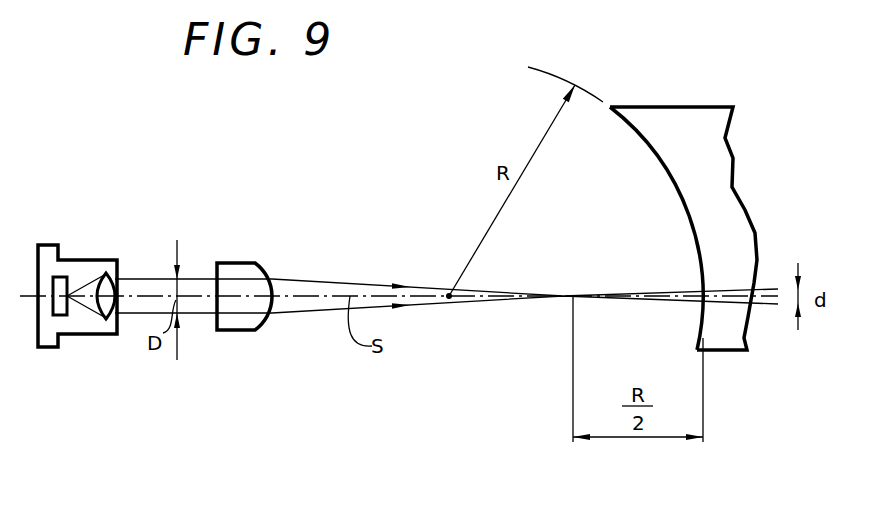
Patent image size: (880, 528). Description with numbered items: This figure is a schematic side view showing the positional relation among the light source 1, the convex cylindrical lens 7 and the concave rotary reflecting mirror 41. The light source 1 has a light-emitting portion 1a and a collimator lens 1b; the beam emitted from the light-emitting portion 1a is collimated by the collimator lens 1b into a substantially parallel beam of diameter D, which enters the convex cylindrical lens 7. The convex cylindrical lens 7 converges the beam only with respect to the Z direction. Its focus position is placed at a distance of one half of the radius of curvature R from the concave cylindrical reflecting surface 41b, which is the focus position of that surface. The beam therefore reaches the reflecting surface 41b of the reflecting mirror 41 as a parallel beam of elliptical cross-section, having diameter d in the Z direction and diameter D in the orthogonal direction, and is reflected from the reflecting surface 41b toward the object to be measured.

The light source 1 is at (92, 337).
The light-emitting portion 1a is at (60, 277).
The collimator lens 1b is at (114, 282).
The convex cylindrical lens 7 is at (263, 323).
The concave rotary reflecting mirror 41 is at (683, 122).
The concave cylindrical reflecting surface 41b is at (686, 205).